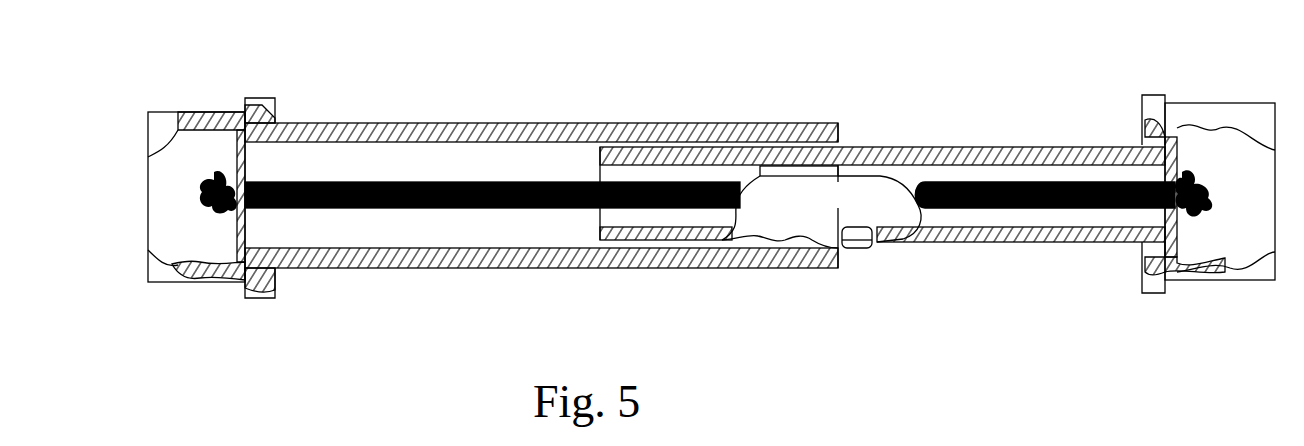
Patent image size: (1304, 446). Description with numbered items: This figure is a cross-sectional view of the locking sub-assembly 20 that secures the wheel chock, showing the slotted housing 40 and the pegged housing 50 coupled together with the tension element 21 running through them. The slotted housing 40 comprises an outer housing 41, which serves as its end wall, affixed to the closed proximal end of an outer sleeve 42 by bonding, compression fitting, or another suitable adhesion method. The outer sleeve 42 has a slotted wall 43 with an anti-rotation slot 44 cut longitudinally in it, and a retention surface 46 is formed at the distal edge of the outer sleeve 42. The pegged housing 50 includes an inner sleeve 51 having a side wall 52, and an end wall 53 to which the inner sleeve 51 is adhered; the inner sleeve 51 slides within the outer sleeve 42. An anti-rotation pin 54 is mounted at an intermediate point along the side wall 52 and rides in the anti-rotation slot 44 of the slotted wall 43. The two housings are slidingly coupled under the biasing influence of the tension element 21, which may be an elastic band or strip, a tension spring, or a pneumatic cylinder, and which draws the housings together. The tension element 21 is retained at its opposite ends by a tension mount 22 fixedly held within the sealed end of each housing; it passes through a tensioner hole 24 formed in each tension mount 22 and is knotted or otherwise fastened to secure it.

The locking sub-assembly 20 is at (770, 120).
The tension element 21 is at (360, 182).
The tension mount 22 is at (239, 133).
The tensioner hole 24 is at (246, 182).
The slotted housing 40 is at (448, 128).
The outer housing 41 is at (167, 112).
The outer sleeve 42 is at (531, 124).
The slotted wall 43 is at (788, 181).
The anti-rotation slot 44 is at (830, 190).
The retention surface 46 is at (840, 128).
The pegged housing 50 is at (1074, 244).
The inner sleeve 51 is at (1141, 242).
The side wall 52 is at (906, 147).
The end wall 53 is at (1228, 103).
The anti-rotation pin 54 is at (868, 249).